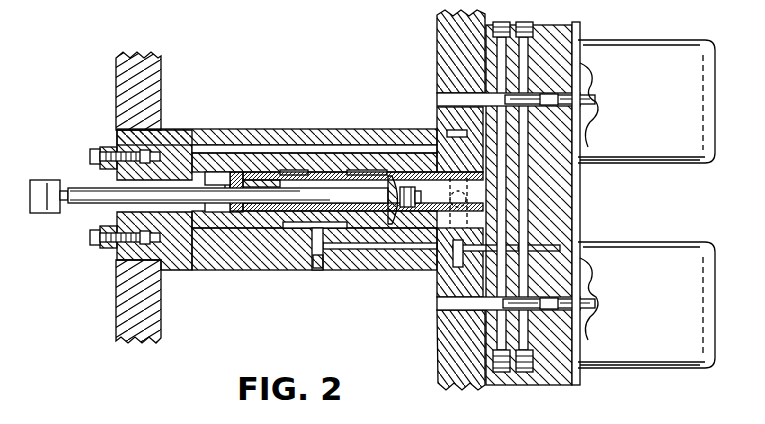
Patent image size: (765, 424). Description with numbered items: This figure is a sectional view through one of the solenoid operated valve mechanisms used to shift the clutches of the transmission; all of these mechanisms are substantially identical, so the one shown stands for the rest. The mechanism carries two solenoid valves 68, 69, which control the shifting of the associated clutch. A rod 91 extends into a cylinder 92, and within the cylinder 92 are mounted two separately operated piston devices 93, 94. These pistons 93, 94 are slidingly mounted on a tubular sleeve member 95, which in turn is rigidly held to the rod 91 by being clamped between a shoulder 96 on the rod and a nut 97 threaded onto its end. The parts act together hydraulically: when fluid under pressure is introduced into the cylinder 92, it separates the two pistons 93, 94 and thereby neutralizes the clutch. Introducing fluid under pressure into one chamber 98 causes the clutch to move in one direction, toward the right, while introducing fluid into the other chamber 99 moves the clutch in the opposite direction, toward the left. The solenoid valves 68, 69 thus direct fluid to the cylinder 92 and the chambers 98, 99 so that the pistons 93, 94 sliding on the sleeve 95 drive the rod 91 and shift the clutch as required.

The solenoid valve 68 is at (656, 113).
The solenoid valve 69 is at (657, 319).
The rod 91 is at (42, 182).
The cylinder 92 is at (298, 232).
The piston device 93 is at (272, 172).
The piston device 94 is at (373, 172).
The tubular sleeve member 95 is at (323, 176).
The shoulder 96 is at (233, 232).
The nut 97 is at (407, 196).
The chamber 98 is at (220, 178).
The chamber 99 is at (447, 201).